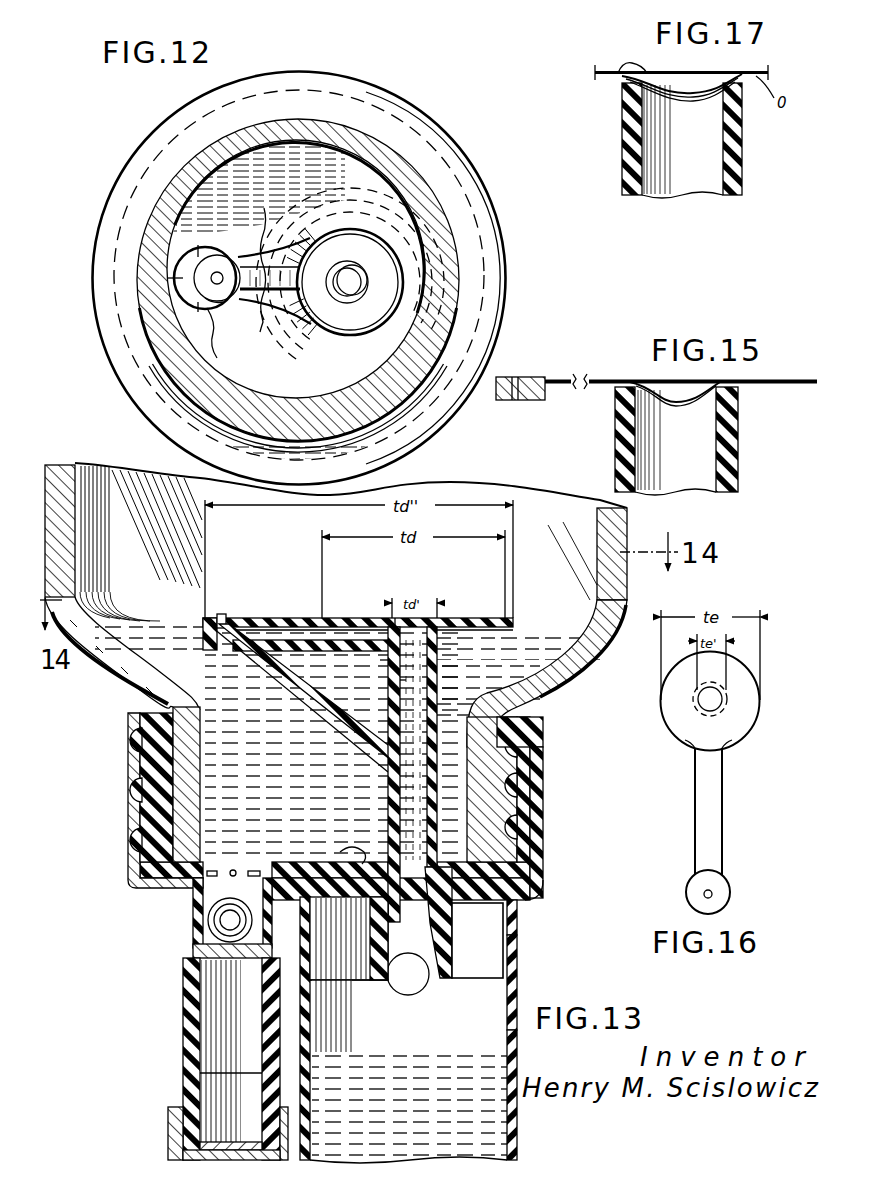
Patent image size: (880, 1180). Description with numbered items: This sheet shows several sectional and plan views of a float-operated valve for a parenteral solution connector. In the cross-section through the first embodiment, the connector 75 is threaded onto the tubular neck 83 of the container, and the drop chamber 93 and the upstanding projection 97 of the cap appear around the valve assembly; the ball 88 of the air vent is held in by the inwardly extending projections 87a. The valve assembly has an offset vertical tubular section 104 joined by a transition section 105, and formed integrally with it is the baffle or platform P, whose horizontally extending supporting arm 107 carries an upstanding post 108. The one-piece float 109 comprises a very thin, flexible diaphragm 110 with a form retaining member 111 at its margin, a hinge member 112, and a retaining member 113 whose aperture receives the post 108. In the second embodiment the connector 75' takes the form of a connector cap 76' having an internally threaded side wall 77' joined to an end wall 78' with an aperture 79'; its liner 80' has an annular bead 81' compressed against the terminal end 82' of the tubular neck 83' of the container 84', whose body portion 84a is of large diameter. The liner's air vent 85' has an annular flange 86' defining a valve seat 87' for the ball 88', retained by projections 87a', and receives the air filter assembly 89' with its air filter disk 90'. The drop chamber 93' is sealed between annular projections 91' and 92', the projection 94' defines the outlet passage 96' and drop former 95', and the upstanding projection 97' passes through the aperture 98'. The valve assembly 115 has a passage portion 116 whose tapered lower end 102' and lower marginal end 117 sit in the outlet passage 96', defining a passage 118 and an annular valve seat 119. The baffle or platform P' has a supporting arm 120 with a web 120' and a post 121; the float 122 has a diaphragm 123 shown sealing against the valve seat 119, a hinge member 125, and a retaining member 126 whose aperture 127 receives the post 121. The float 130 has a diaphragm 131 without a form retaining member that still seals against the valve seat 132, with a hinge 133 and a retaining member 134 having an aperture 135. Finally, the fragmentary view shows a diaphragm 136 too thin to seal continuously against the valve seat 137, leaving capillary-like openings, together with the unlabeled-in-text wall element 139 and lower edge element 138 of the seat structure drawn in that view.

In FIG. 12, the connector 75 is at (299, 278).
In FIG. 12, the externally threaded tubular neck 83 is at (298, 242).
In FIG. 12, the ball 88 is at (146, 266).
In FIG. 12, the inwardly extending projections 87a is at (144, 281).
In FIG. 12, the drop chamber 93 is at (337, 285).
In FIG. 12, the upstanding projection 97 is at (352, 269).
In FIG. 12, the vertically extending tubular section 104 is at (285, 345).
In FIG. 12, the transition section 105 is at (362, 334).
In FIG. 12, the supporting arm 107 is at (264, 230).
In FIG. 12, the upstanding post 108 is at (217, 256).
In FIG. 12, the one-piece float 109 is at (266, 327).
In FIG. 12, the very thin, flexible diaphragm 110 is at (349, 238).
In FIG. 12, the form retaining member 111 is at (370, 243).
In FIG. 12, the hinge member 112 is at (219, 303).
In FIG. 12, the retaining member 113 is at (227, 343).
In FIG. 12, the baffle or platform P is at (382, 206).
In FIG. 17, the very thin, flexible diaphragm 136 is at (640, 70).
In FIG. 17, the valve seat 137 is at (616, 74).
In FIG. 17, the bottom edge 138 is at (650, 193).
In FIG. 17, the side wall 139 is at (630, 168).
In FIG. 15, the one-piece float 130 is at (553, 373).
In FIG. 16, the one-piece float 130 is at (796, 798).
In FIG. 15, the very thin, flexible diaphragm 131 is at (746, 388).
In FIG. 16, the very thin, flexible diaphragm 131 is at (753, 713).
In FIG. 15, the valve seat 132 is at (636, 374).
In FIG. 16, the valve seat 132 is at (729, 701).
In FIG. 16, the thin, flexible hinge 133 is at (700, 799).
In FIG. 16, the retaining member 134 is at (727, 895).
In FIG. 16, the aperture 135 is at (712, 894).
In FIG. 13, the container 84' is at (639, 560).
In FIG. 13, the body portion 84a is at (578, 667).
In FIG. 13, the thin, flexible hinge member 125 is at (264, 618).
In FIG. 13, the retaining member 126 is at (202, 620).
In FIG. 13, the aperture 127 is at (221, 613).
In FIG. 13, the post 121 is at (222, 622).
In FIG. 13, the float 122 is at (293, 618).
In FIG. 13, the baffle or platform P' is at (352, 600).
In FIG. 13, the very thin, flexible diaphragm 123 is at (376, 618).
In FIG. 13, the supporting arm 120 is at (391, 640).
In FIG. 13, the web 120' is at (304, 698).
In FIG. 13, the terminal end 82' is at (131, 866).
In FIG. 13, the aperture 98' is at (354, 868).
In FIG. 13, the annular bead 81' is at (516, 865).
In FIG. 13, the liner 80' is at (516, 888).
In FIG. 13, the end wall 78' is at (136, 814).
In FIG. 13, the tubular neck 83' is at (134, 784).
In FIG. 13, the side wall 77' is at (531, 789).
In FIG. 13, the connector 75' is at (559, 822).
In FIG. 13, the connector cap 76' is at (560, 865).
In FIG. 13, the valve assembly 115 is at (384, 783).
In FIG. 13, the passage portion 116 is at (440, 688).
In FIG. 13, the upstanding projection 97' is at (372, 750).
In FIG. 13, the valve seat 119 is at (385, 666).
In FIG. 13, the passage 118 is at (404, 679).
In FIG. 13, the annular projection 91' is at (489, 922).
In FIG. 13, the tapered lower end 102' is at (473, 940).
In FIG. 13, the downwardly extending projection 94' is at (467, 953).
In FIG. 13, the lower marginal end 117 is at (411, 896).
In FIG. 13, the drop former 95' is at (416, 986).
In FIG. 13, the air vent 85' is at (207, 918).
In FIG. 13, the ball 88' is at (196, 920).
In FIG. 13, the inwardly extending projections 87a' is at (237, 853).
In FIG. 13, the valve seat 87' is at (206, 1059).
In FIG. 13, the annular flange 86' is at (229, 1050).
In FIG. 13, the air filter assembly 89' is at (200, 1116).
In FIG. 13, the air filter disk 90' is at (197, 1154).
In FIG. 13, the outlet passage 96' is at (349, 974).
In FIG. 13, the annular projection 92' is at (543, 918).
In FIG. 13, the drop chamber 93' is at (548, 982).
In FIG. 13, the aperture 79' is at (528, 1095).